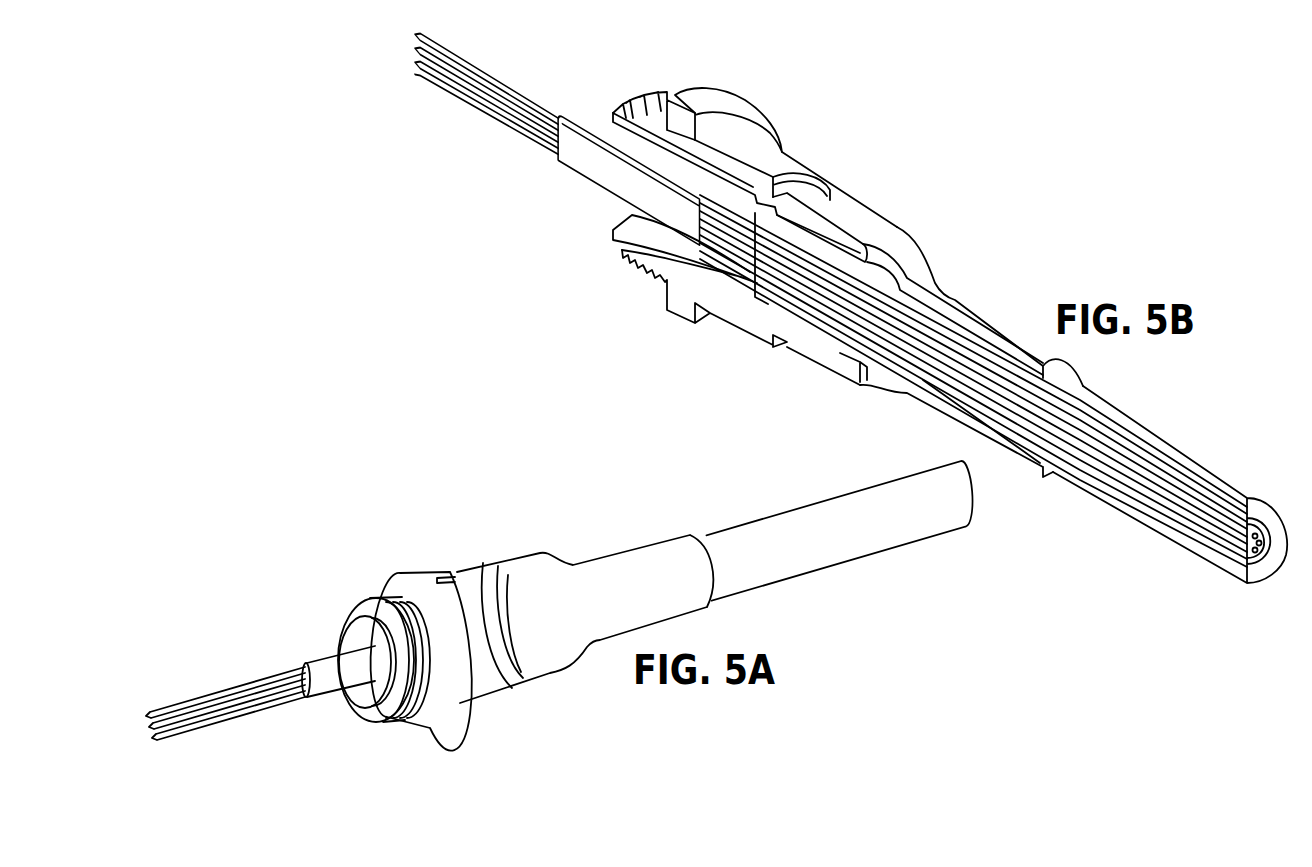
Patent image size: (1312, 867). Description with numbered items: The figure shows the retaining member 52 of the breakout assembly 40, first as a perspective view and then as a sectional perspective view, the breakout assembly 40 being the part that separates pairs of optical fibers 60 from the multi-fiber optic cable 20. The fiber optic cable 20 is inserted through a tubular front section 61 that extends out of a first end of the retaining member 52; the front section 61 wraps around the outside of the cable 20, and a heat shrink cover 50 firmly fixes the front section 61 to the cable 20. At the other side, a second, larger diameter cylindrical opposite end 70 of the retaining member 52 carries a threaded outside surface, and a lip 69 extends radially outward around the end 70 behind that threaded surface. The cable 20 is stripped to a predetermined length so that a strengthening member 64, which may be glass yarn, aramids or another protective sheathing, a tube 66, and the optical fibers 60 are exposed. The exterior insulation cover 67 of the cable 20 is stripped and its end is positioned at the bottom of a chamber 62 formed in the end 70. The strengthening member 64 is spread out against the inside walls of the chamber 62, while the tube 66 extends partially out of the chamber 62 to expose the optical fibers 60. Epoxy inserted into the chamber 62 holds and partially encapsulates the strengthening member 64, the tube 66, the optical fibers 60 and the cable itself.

In FIG. 5B, the fiber optic cable 20 is at (1166, 435).
In FIG. 5A, the fiber optic cable 20 is at (822, 490).
In FIG. 5B, the breakout assembly 40 is at (932, 185).
In FIG. 5A, the breakout assembly 40 is at (527, 523).
In FIG. 5B, the heat shrink cover 50 is at (1000, 322).
In FIG. 5A, the heat shrink cover 50 is at (612, 548).
In FIG. 5B, the retaining member 52 is at (800, 160).
In FIG. 5A, the retaining member 52 is at (456, 572).
In FIG. 5B, the optical fibers 60 is at (506, 90).
In FIG. 5A, the optical fibers 60 is at (222, 680).
In FIG. 5B, the front section 61 is at (840, 247).
In FIG. 5B, the chamber 62 is at (735, 297).
In FIG. 5B, the strengthening member 64 is at (613, 241).
In FIG. 5A, the strengthening member 64 is at (337, 650).
In FIG. 5B, the tube 66 is at (577, 118).
In FIG. 5A, the tube 66 is at (340, 700).
In FIG. 5B, the exterior insulation cover 67 is at (870, 292).
In FIG. 5B, the lip 69 is at (736, 95).
In FIG. 5B, the opposite end 70 is at (664, 88).